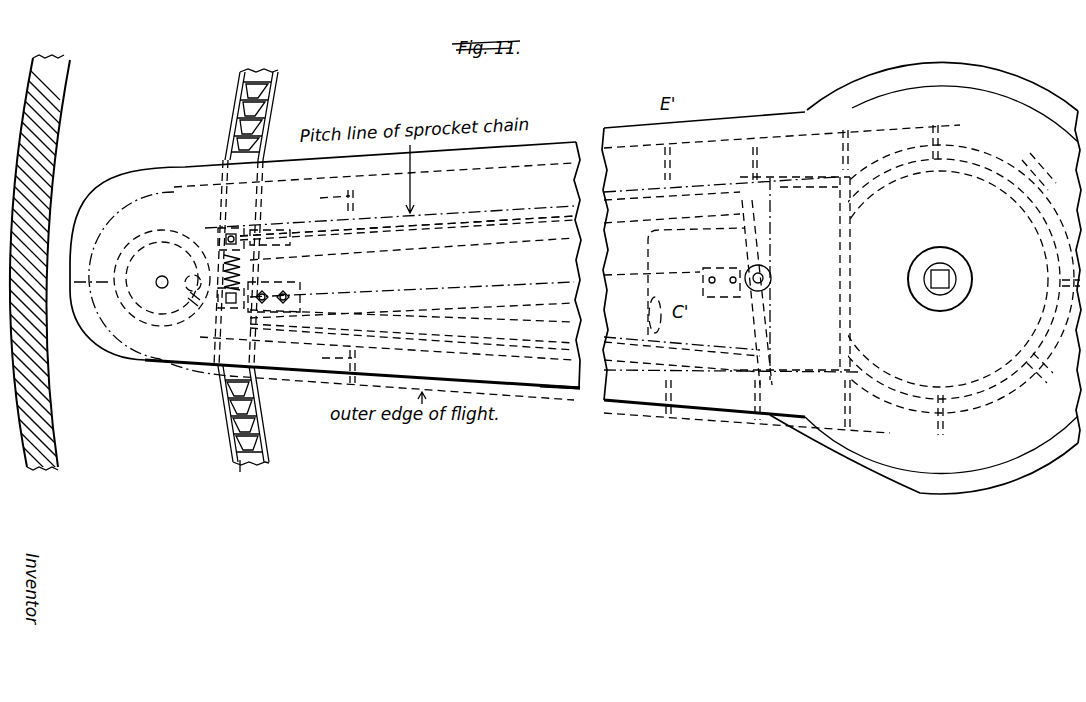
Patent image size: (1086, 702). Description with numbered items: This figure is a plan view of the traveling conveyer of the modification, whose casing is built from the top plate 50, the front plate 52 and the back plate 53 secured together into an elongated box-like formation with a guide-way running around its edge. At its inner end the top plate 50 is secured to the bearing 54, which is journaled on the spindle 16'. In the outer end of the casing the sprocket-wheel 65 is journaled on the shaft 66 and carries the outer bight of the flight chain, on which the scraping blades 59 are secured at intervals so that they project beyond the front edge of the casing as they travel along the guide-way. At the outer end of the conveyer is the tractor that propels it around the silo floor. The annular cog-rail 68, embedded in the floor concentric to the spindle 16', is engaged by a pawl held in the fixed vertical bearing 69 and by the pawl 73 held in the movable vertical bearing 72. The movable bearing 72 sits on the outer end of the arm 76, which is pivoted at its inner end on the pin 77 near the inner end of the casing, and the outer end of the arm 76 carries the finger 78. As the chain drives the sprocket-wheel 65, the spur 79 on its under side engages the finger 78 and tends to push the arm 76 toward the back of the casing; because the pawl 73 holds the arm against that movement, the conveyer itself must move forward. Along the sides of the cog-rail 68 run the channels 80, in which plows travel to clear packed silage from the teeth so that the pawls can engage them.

The top plate 50 is at (126, 185).
The front plate 52 is at (462, 222).
The back plate 53 is at (553, 345).
The bearing 54 is at (967, 272).
The scraping blades 59 is at (1043, 383).
The sprocket-wheel 65 is at (145, 323).
The shaft 66 is at (156, 284).
The annular cog-rail 68 is at (238, 437).
The vertical bearing 69 is at (227, 240).
The vertical bearing 72 is at (227, 292).
The pawl 73 is at (240, 298).
The arm 76 is at (472, 292).
The pin 77 is at (766, 278).
The finger 78 is at (168, 294).
The spur 79 is at (186, 285).
The channels 80 is at (265, 460).
The spindle 16' is at (974, 289).